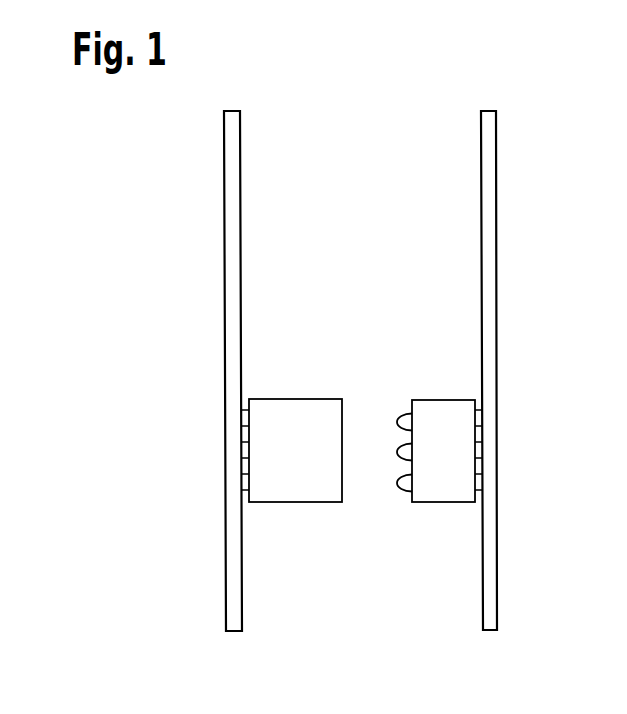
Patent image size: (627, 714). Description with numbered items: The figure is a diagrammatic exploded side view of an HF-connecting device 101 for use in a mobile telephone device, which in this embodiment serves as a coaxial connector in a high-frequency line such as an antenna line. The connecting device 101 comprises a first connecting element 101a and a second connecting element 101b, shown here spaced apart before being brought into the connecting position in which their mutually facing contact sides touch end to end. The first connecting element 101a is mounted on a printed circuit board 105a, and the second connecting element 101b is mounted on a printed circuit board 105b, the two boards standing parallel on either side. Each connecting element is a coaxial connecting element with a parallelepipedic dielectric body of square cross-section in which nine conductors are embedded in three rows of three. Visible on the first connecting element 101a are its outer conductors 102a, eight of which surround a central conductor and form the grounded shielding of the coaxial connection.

The connecting device 101 is at (366, 161).
The first connecting element 101a is at (295, 407).
The second connecting element 101b is at (435, 407).
The outer conductors 102a is at (407, 483).
The printed circuit board 105a is at (232, 558).
The printed circuit board 105b is at (490, 563).